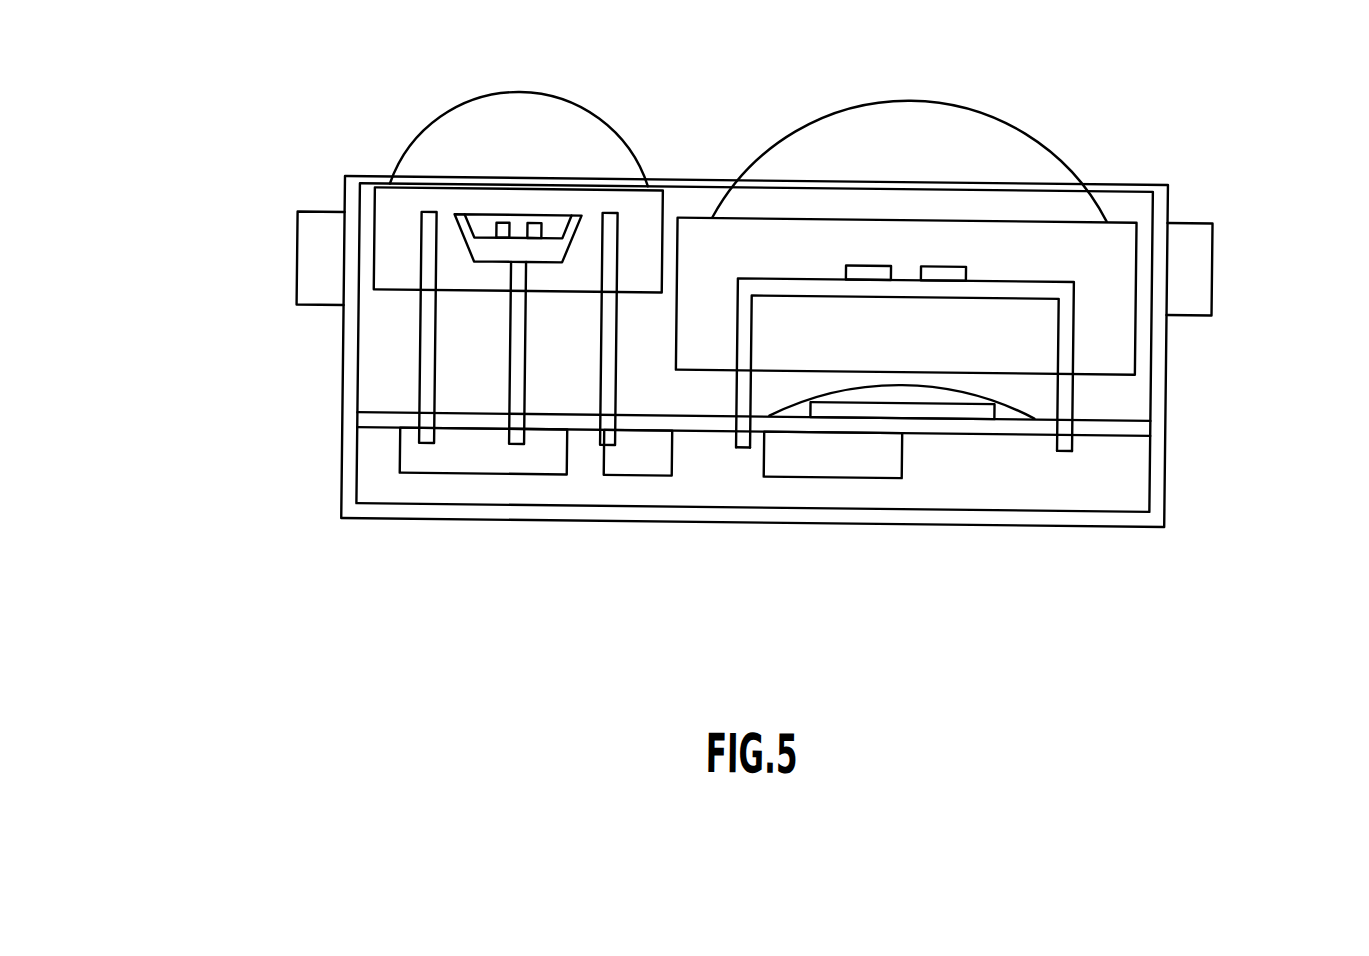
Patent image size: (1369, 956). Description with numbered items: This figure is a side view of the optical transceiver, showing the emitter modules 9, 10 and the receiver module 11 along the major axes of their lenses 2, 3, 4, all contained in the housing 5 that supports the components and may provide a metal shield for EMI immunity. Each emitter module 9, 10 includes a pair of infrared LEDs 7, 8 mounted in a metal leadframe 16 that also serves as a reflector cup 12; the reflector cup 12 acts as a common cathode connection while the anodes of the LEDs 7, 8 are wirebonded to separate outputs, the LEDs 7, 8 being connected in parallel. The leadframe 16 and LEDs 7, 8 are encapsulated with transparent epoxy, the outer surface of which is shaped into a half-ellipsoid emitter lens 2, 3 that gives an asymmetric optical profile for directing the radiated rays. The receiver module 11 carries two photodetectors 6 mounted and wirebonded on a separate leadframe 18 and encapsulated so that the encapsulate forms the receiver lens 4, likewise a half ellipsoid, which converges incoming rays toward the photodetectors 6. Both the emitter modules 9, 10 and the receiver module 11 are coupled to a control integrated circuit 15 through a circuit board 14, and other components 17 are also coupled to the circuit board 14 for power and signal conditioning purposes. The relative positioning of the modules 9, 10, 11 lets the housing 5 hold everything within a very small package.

The emitter lens 2 is at (485, 116).
The emitter lens 3 is at (435, 119).
The receiver lens 4 is at (918, 139).
The housing 5 is at (1205, 519).
The photodetectors 6 is at (872, 262).
The infrared LED 7 is at (538, 131).
The infrared LED 8 is at (503, 221).
The emitter module 9 is at (388, 238).
The emitter module 10 is at (388, 238).
The receiver module 11 is at (779, 230).
The reflector cup 12 is at (577, 156).
The circuit board 14 is at (695, 389).
The control integrated circuit 15 is at (1012, 388).
The metal leadframe 16 is at (412, 327).
The other components 17 is at (811, 465).
The leadframe 18 is at (1024, 365).